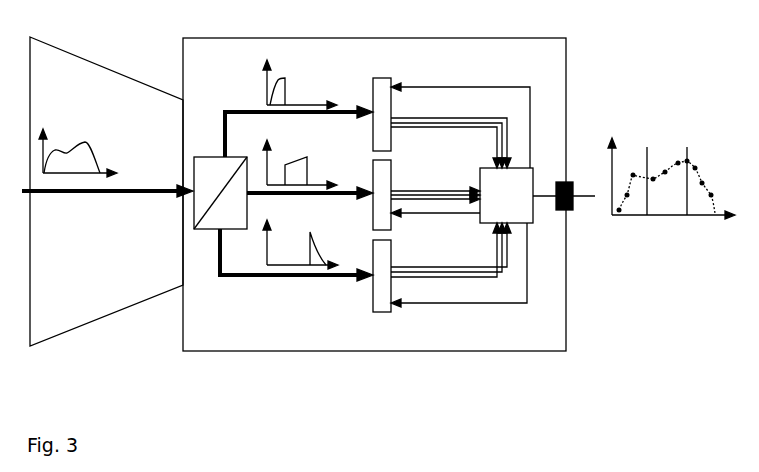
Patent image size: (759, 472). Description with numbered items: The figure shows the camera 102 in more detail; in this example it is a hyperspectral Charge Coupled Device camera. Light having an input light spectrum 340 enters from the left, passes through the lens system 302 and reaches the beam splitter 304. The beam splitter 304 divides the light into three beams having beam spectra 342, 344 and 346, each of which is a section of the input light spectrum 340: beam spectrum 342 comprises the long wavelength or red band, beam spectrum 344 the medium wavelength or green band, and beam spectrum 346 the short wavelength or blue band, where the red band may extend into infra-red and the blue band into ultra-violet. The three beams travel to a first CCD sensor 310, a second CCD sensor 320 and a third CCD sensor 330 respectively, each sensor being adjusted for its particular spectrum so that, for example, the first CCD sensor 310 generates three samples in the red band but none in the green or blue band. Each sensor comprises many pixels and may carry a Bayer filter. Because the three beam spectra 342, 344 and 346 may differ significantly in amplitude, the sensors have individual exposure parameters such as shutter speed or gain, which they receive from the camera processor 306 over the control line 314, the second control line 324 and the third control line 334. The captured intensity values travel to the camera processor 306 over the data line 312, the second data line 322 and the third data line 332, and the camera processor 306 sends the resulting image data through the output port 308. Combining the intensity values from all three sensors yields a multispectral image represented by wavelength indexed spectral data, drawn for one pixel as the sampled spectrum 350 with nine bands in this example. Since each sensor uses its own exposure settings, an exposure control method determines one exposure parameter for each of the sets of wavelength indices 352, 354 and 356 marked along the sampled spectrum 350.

The camera 102 is at (320, 38).
The lens system 302 is at (78, 57).
The beam splitter 304 is at (199, 156).
The camera processor 306 is at (536, 172).
The output port 308 is at (592, 172).
The first CCD sensor 310 is at (378, 77).
The data line 312 is at (440, 118).
The control line 314 is at (496, 87).
The second CCD sensor 320 is at (392, 172).
The second data line 322 is at (462, 190).
The second control line 324 is at (447, 215).
The third CCD sensor 330 is at (392, 254).
The third data line 332 is at (445, 266).
The third control line 334 is at (447, 304).
The input light spectrum 340 is at (77, 141).
The beam spectrum 342 is at (280, 79).
The beam spectrum 344 is at (300, 158).
The beam spectrum 346 is at (314, 240).
The sampled spectrum 350 is at (663, 122).
The set of wavelength indices 352 is at (635, 207).
The set of wavelength indices 354 is at (673, 207).
The set of wavelength indices 356 is at (708, 207).